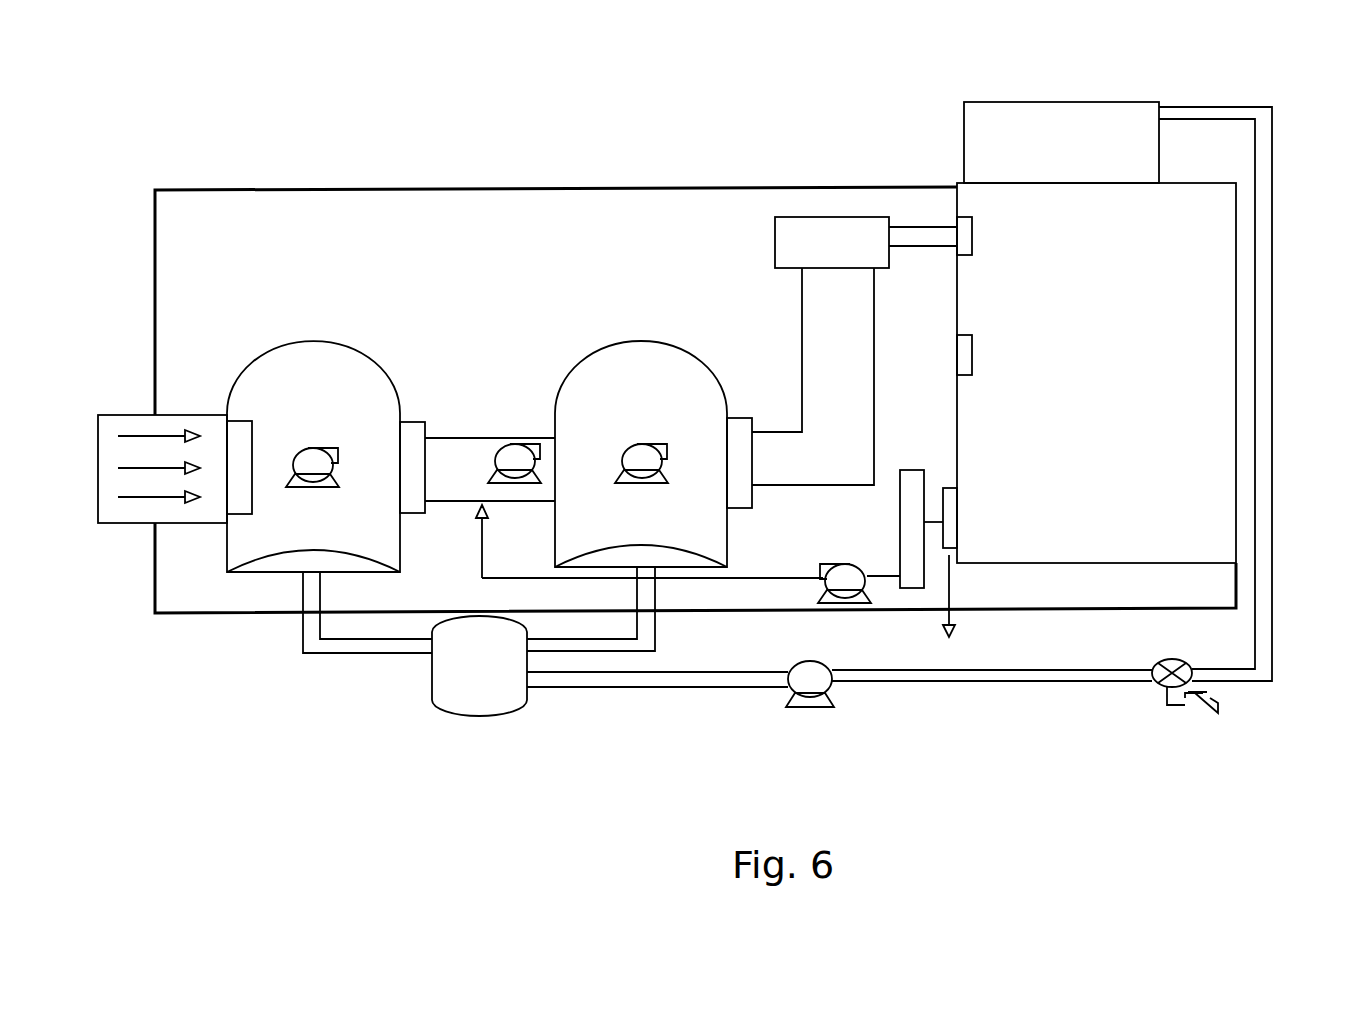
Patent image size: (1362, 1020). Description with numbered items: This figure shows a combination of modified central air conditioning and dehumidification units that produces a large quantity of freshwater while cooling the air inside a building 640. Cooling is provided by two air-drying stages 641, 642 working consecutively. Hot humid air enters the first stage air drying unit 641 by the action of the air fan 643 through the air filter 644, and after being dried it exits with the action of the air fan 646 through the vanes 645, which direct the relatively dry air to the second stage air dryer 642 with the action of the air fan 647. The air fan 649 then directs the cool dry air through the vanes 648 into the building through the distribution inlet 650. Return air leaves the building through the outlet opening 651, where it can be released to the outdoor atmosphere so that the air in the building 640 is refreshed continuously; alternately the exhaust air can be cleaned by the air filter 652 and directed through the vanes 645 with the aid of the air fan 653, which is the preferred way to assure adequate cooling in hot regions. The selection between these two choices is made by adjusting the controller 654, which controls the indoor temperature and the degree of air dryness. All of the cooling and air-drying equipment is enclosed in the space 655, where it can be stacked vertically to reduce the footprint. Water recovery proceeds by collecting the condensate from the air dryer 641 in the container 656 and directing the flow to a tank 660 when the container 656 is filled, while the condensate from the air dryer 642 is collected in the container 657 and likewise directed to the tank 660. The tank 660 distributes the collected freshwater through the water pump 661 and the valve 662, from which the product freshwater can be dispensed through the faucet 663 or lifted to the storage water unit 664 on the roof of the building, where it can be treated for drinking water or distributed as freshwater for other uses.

The building 640 is at (1112, 280).
The first stage air drying unit 641 is at (365, 362).
The second stage air dryer 642 is at (582, 363).
The air fan 643 is at (307, 447).
The air filter 644 is at (232, 440).
The vanes 645 is at (439, 438).
The air fan 646 is at (513, 455).
The air fan 647 is at (649, 445).
The vanes 648 is at (828, 307).
The air fan 649 is at (775, 217).
The distribution inlet 650 is at (972, 236).
The outlet opening 651 is at (950, 522).
The air filter 652 is at (924, 477).
The air fan 653 is at (845, 581).
The controller 654 is at (972, 357).
The space 655 is at (168, 190).
The container 656 is at (263, 572).
The container 657 is at (685, 560).
The tank 660 is at (489, 716).
The water pump 661 is at (807, 707).
The valve 662 is at (1159, 687).
The faucet 663 is at (1218, 703).
The storage water unit 664 is at (1099, 147).